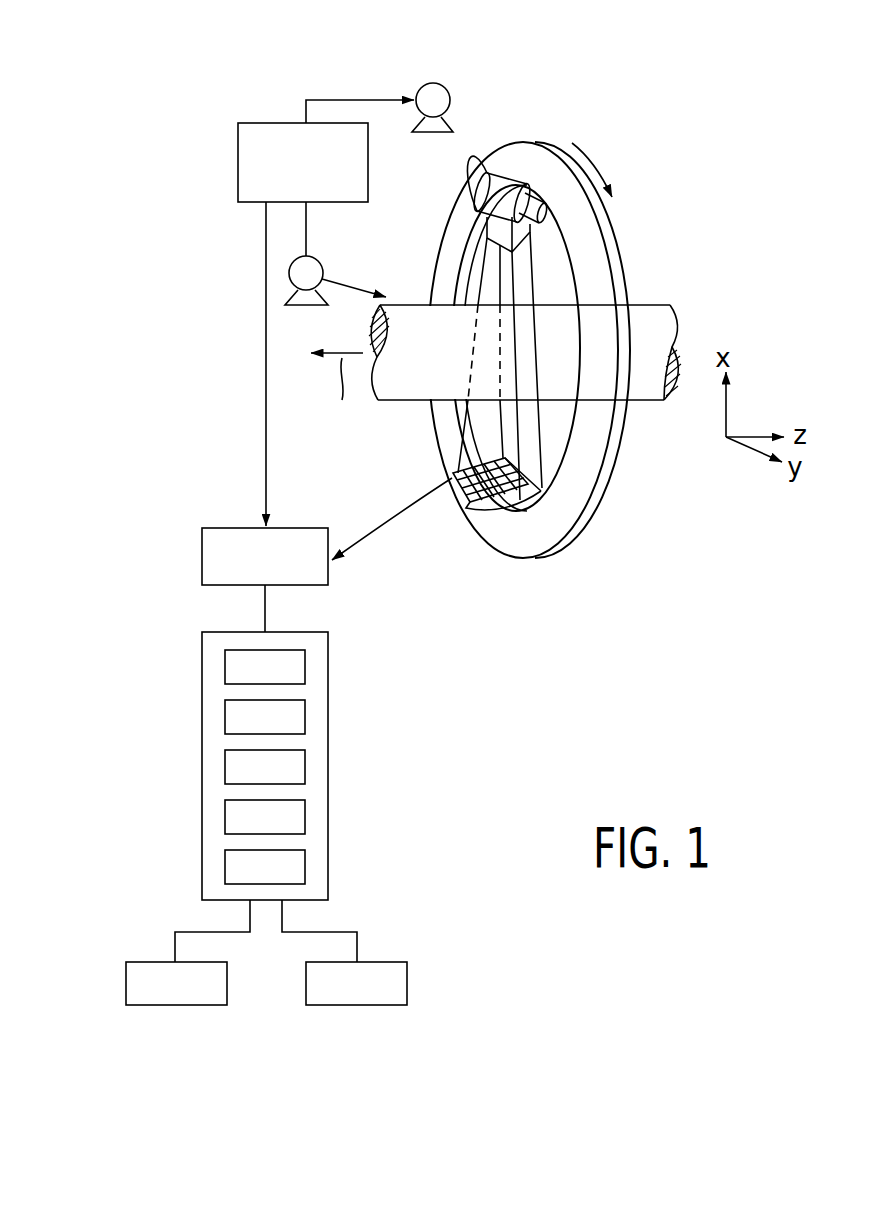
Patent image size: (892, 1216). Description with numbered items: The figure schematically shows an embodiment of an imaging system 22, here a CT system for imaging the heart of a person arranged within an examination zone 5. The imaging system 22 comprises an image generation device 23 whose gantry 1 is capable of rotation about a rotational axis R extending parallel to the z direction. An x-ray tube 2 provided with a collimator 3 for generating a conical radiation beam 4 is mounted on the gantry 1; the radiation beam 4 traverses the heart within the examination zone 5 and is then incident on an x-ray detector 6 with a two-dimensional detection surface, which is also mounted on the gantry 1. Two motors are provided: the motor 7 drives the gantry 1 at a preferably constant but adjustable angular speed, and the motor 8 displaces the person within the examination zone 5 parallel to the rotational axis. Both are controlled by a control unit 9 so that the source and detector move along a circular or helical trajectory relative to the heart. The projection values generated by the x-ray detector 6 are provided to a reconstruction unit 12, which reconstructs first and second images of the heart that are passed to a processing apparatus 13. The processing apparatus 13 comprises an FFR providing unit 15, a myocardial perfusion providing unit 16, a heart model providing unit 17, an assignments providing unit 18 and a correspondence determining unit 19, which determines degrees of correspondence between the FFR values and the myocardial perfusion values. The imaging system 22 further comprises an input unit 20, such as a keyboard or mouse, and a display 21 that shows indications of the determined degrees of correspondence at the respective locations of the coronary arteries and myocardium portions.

The gantry 1 is at (575, 492).
The x-ray tube 2 is at (499, 183).
The collimator 3 is at (527, 237).
The radiation beam 4 is at (517, 447).
The examination zone 5 is at (409, 303).
The x-ray detector 6 is at (488, 508).
The motor 7 is at (445, 83).
The motor 8 is at (323, 267).
The control unit 9 is at (253, 122).
The reconstruction unit 12 is at (202, 548).
The processing apparatus 13 is at (202, 773).
The FFR providing unit 15 is at (305, 666).
The myocardial perfusion providing unit 16 is at (305, 716).
The heart model providing unit 17 is at (305, 766).
The assignments providing unit 18 is at (305, 817).
The correspondence determining unit 19 is at (305, 866).
The input unit 20 is at (187, 1008).
The display 21 is at (350, 1008).
The imaging system 22 is at (716, 125).
The image generation device 23 is at (128, 608).